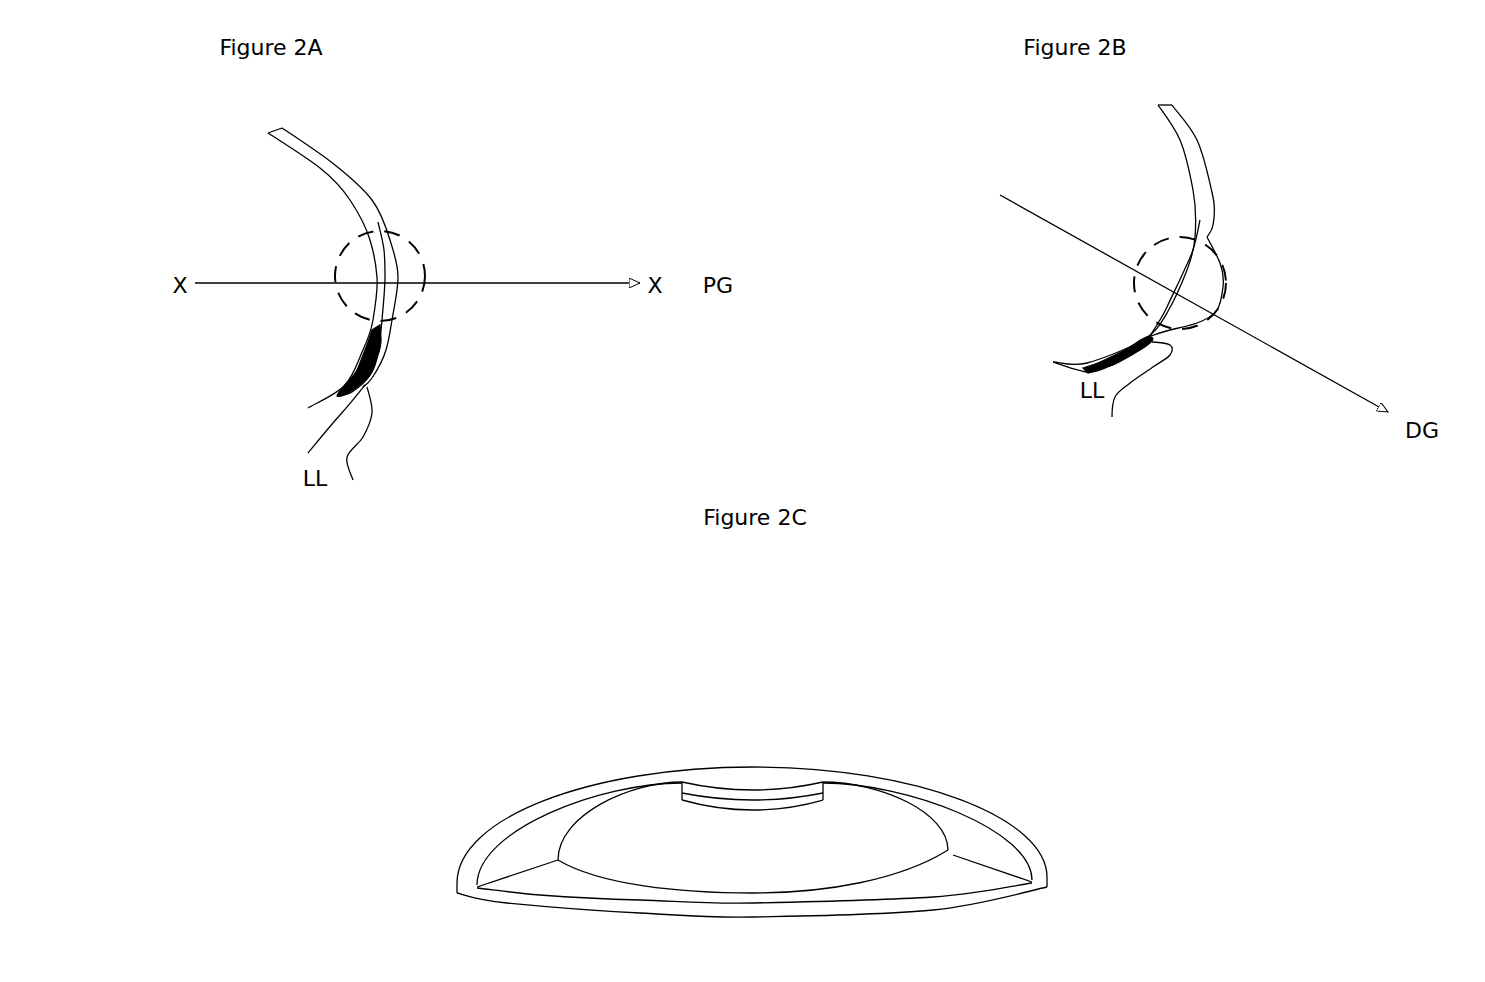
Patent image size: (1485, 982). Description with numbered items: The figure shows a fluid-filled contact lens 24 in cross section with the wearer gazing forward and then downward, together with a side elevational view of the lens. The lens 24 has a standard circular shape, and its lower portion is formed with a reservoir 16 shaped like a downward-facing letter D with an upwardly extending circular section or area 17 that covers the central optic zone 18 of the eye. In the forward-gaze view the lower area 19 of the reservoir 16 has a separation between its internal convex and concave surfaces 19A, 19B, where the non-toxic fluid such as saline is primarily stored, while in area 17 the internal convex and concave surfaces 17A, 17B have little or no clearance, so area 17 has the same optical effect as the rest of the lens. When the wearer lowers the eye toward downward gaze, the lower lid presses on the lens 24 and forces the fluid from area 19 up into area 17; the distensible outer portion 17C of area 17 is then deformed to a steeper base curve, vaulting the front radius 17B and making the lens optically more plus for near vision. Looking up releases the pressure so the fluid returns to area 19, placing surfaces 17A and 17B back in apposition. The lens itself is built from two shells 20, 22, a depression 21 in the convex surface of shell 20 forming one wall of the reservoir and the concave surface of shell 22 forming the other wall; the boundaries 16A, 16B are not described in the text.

In FIG. 2A, the reservoir 16 is at (385, 375).
In FIG. 2C, the reservoir 16 is at (680, 826).
In FIG. 2C, the optical zone boundary 16A is at (625, 813).
In FIG. 2C, the peripheral zone boundary 16B is at (572, 826).
In FIG. 2A, the upwardly extending circular section or area 17 is at (392, 272).
In FIG. 2B, the upwardly extending circular section or area 17 is at (1215, 266).
In FIG. 2C, the upwardly extending circular section or area 17 is at (833, 793).
In FIG. 2B, the internal convex surface 17A is at (1211, 266).
In FIG. 2C, the internal convex surface 17A is at (765, 814).
In FIG. 2C, the internal concave surface 17B is at (778, 780).
In FIG. 2B, the outer portion 17C is at (1229, 266).
In FIG. 2A, the central optic zone 18 is at (410, 231).
In FIG. 2B, the central optic zone 18 is at (1231, 302).
In FIG. 2C, the central optic zone 18 is at (752, 767).
In FIG. 2A, the lower area 19 is at (352, 375).
In FIG. 2B, the lower area 19 is at (1114, 345).
In FIG. 2C, the lower area 19 is at (588, 861).
In FIG. 2A, the internal convex surface 19A is at (364, 350).
In FIG. 2A, the internal concave surface 19B is at (382, 350).
In FIG. 2C, the contact lens shell 20 is at (998, 850).
In FIG. 2A, the depression 21 is at (370, 258).
In FIG. 2B, the depression 21 is at (1186, 247).
In FIG. 2C, the contact lens shell 22 is at (964, 875).
In FIG. 2A, the contact lens 24 is at (333, 268).
In FIG. 2B, the contact lens 24 is at (1136, 238).
In FIG. 2C, the contact lens 24 is at (675, 724).